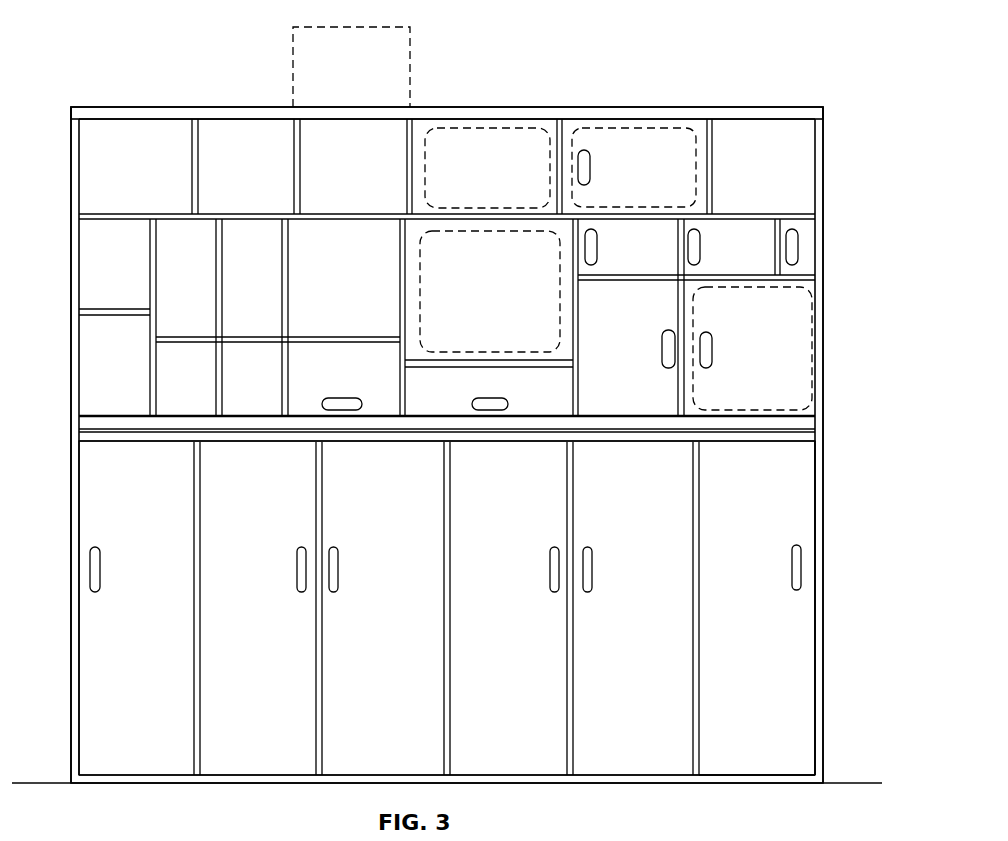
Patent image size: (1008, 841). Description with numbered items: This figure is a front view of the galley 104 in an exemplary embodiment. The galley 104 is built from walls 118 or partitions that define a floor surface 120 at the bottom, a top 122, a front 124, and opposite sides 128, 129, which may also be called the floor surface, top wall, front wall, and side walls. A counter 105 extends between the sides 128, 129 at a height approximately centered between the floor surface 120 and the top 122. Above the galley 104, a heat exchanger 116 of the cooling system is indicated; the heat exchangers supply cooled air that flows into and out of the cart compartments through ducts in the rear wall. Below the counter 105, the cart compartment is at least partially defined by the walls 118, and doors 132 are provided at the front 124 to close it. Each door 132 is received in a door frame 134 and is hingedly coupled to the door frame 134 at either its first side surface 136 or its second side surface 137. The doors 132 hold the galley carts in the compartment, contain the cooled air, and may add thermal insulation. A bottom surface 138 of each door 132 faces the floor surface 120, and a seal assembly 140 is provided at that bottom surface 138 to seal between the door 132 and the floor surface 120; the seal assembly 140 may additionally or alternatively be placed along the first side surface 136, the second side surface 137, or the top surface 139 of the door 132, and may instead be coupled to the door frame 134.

The galley 104 is at (687, 96).
The counter 105 is at (773, 423).
The heat exchanger 116 is at (292, 77).
The walls 118 is at (545, 118).
The floor surface 120 is at (858, 782).
The top 122 is at (128, 107).
The front 124 is at (464, 150).
The side 128 is at (71, 233).
The side 129 is at (823, 210).
The door 132 is at (802, 664).
The door frame 134 is at (762, 436).
The first side surface 136 is at (695, 682).
The second side surface 137 is at (818, 732).
The bottom surface 138 is at (798, 778).
The top surface 139 is at (790, 440).
The seal assembly 140 is at (720, 780).